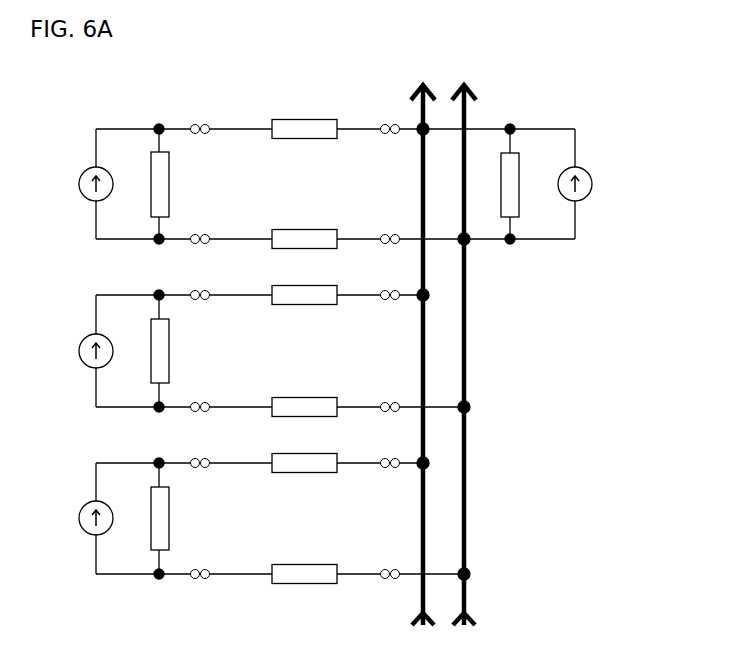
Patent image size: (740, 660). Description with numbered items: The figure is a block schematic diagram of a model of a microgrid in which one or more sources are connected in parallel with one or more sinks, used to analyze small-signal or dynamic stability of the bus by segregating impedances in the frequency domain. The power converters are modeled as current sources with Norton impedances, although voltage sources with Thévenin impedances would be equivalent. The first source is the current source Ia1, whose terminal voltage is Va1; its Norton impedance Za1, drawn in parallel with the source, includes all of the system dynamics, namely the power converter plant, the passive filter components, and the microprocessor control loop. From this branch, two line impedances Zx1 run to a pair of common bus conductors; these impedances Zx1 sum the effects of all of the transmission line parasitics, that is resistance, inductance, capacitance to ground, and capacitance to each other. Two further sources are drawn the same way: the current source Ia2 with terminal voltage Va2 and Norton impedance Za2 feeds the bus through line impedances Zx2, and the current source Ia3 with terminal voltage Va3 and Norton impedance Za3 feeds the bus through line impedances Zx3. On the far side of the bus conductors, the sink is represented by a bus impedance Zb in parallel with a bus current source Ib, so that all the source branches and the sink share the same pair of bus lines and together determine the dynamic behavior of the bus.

The current source Ia1 is at (85, 184).
The source voltage Va1 is at (143, 124).
The Norton impedance Za1 is at (174, 186).
The transmission line impedances Zx1 is at (304, 177).
The current source Ia2 is at (85, 351).
The source voltage Va2 is at (143, 290).
The Norton impedance Za2 is at (174, 353).
The transmission line impedances Zx2 is at (304, 344).
The current source Ia3 is at (85, 518).
The source voltage Va3 is at (143, 458).
The Norton impedance Za3 is at (174, 521).
The transmission line impedances Zx3 is at (304, 511).
The bus impedance Zb is at (499, 184).
The bus current source Ib is at (583, 184).